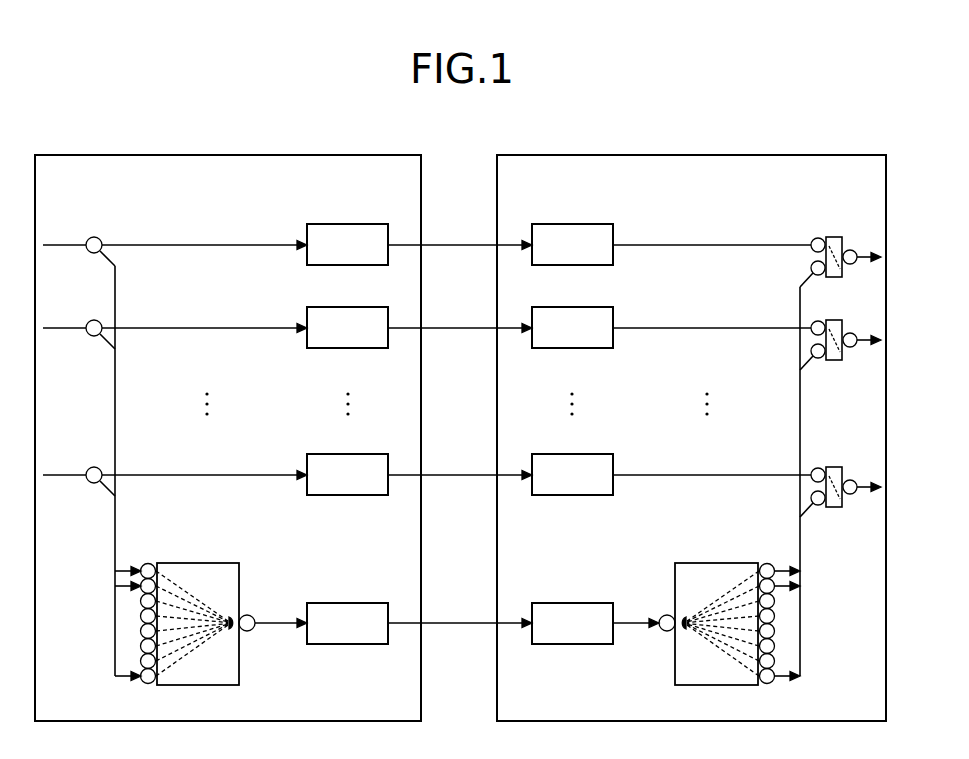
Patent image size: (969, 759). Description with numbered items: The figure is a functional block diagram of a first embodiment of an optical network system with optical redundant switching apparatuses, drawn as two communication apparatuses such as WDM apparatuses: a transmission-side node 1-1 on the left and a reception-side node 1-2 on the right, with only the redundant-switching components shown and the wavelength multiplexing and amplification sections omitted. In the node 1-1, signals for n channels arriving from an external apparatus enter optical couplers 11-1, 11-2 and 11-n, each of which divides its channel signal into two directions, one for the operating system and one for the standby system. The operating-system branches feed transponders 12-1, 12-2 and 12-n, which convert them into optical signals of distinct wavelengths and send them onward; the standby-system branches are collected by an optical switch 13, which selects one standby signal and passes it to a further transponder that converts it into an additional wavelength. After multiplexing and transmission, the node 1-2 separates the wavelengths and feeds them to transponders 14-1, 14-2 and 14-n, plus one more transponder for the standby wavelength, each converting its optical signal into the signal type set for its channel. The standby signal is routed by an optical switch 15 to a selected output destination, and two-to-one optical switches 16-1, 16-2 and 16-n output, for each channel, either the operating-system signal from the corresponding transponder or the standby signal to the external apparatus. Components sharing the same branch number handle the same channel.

The node 1-1 is at (355, 155).
The node 1-2 is at (819, 155).
The optical coupler 11-1 is at (88, 238).
The optical coupler 11-2 is at (88, 321).
The optical coupler 11-n is at (88, 468).
The transponder (TPND) 12-1 is at (357, 224).
The transponder (TPND) 12-2 is at (357, 307).
The transponder (TPND) 12-n is at (357, 454).
The optical switch 13 is at (201, 563).
The transponder 14-1 is at (589, 224).
The transponder 14-2 is at (589, 307).
The transponder 14-n is at (589, 454).
The optical switch 15 is at (721, 563).
The optical switch 16-1 is at (834, 237).
The optical switch 16-2 is at (834, 320).
The optical switch 16-n is at (834, 467).